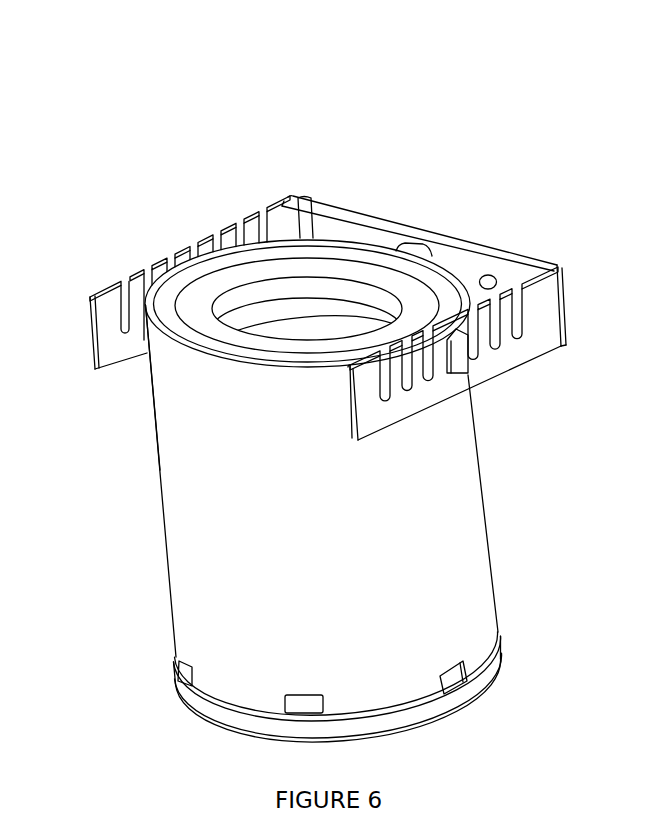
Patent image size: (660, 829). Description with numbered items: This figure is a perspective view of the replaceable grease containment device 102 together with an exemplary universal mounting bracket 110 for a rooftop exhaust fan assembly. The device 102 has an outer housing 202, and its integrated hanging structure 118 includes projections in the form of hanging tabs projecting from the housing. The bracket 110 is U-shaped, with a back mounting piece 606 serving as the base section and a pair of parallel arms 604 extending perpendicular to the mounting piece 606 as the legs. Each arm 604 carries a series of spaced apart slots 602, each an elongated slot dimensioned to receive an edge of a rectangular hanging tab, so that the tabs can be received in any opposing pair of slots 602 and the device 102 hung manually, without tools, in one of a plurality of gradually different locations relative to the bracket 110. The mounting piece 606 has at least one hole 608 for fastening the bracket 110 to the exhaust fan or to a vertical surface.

The grease containment device 102 is at (158, 487).
The universal mounting bracket 110 is at (345, 184).
The integrated hanging structure 118 is at (465, 373).
The outer housing 202 is at (213, 598).
The slot 602 is at (208, 242).
The parallel arm 604 is at (273, 207).
The back mounting piece 606 is at (455, 258).
The hole 608 is at (495, 273).